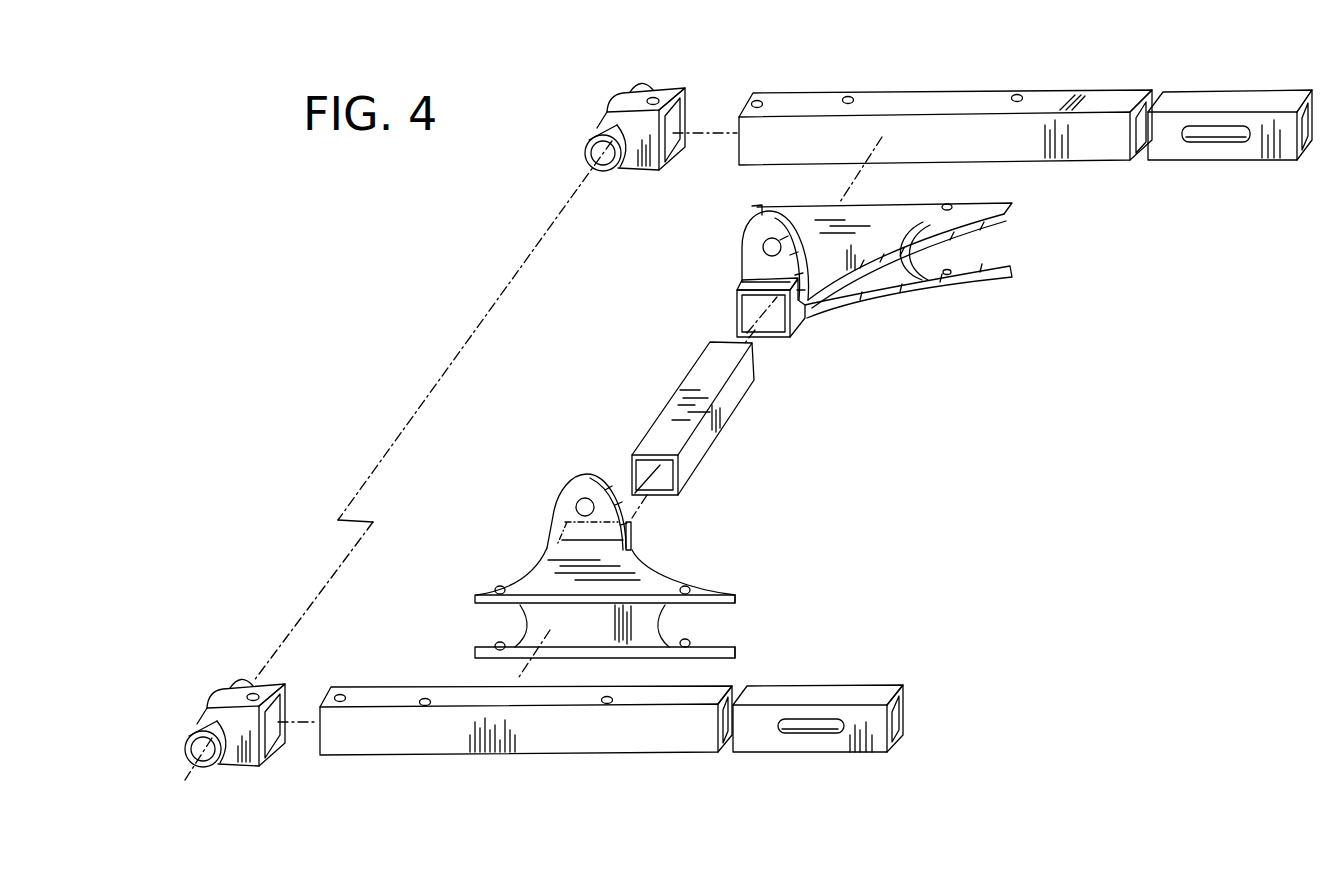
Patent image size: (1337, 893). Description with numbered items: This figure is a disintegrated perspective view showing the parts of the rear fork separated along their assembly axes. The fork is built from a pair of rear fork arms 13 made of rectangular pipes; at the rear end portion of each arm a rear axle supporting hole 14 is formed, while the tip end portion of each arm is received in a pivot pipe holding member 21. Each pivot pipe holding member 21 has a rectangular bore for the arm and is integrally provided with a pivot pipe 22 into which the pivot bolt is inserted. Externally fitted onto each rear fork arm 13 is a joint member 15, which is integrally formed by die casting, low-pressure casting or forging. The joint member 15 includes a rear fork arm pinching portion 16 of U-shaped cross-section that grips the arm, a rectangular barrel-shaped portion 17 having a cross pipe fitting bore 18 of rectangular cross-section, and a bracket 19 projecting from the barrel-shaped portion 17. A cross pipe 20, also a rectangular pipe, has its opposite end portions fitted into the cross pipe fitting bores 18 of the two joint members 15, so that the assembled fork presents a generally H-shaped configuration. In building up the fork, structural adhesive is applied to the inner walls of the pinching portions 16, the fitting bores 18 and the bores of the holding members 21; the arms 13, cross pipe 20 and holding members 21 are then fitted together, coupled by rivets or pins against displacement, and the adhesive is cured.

The rear fork arm 13 is at (918, 100).
The rear axle supporting hole 14 is at (1220, 126).
The joint member 15 is at (941, 297).
The rear fork arm pinching portion 16 is at (737, 597).
The rectangular barrel-shaped portion 17 is at (802, 318).
The cross pipe fitting bore 18 is at (774, 325).
The bracket 19 is at (745, 240).
The cross pipe 20 is at (728, 402).
The pivot pipe holding member 21 is at (664, 87).
The pivot pipe 22 is at (641, 82).